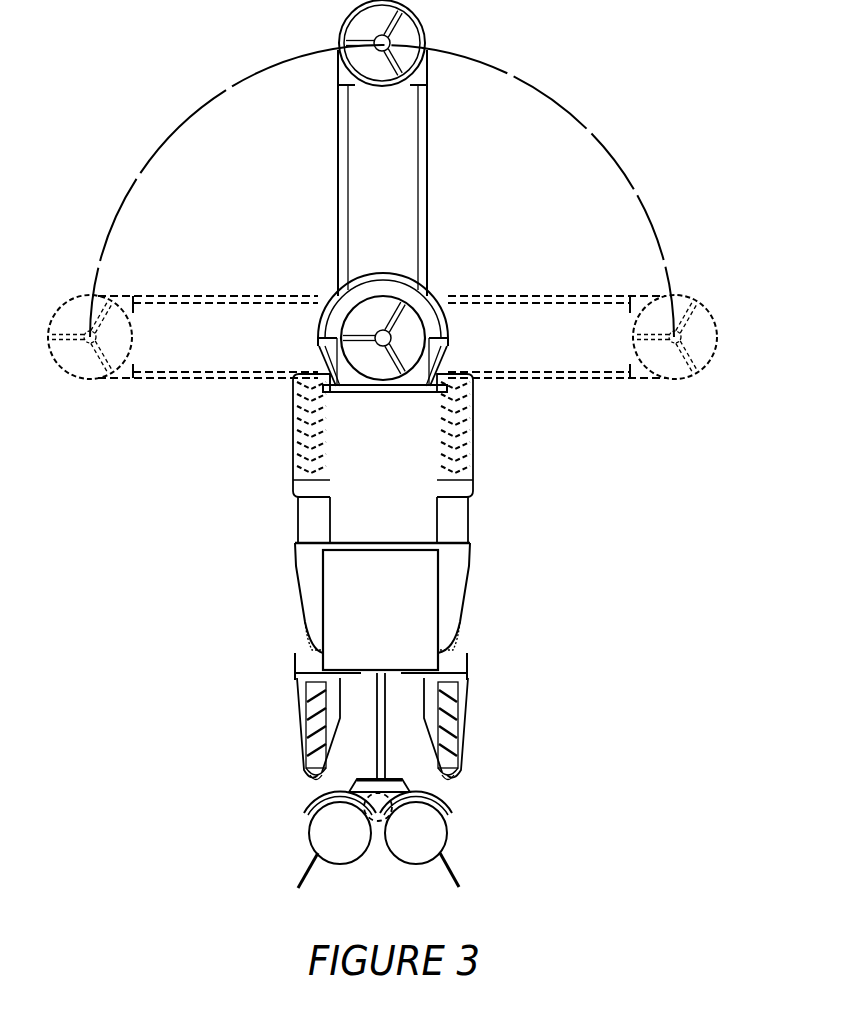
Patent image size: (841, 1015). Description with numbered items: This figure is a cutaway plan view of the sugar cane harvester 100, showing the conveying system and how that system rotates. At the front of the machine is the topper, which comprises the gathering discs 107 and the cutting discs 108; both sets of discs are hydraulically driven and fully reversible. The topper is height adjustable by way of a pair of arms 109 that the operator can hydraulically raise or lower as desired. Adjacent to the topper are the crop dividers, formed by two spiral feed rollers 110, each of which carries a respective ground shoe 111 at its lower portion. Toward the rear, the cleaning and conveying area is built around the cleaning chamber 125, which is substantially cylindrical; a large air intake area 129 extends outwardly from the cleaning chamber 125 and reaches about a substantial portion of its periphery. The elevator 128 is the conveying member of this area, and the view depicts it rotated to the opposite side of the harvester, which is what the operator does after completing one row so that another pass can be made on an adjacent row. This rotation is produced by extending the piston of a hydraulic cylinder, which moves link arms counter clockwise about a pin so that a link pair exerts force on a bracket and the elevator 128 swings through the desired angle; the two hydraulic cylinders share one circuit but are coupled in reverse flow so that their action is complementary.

The sugar cane harvester 100 is at (476, 537).
The gathering discs 107 is at (322, 837).
The cutting discs 108 is at (375, 832).
The arms 109 is at (384, 733).
The spiral feed rollers 110 is at (302, 684).
The ground shoe 111 is at (313, 781).
The cleaning chamber 125 is at (448, 327).
The elevator 128 is at (427, 172).
The air intake area 129 is at (431, 292).